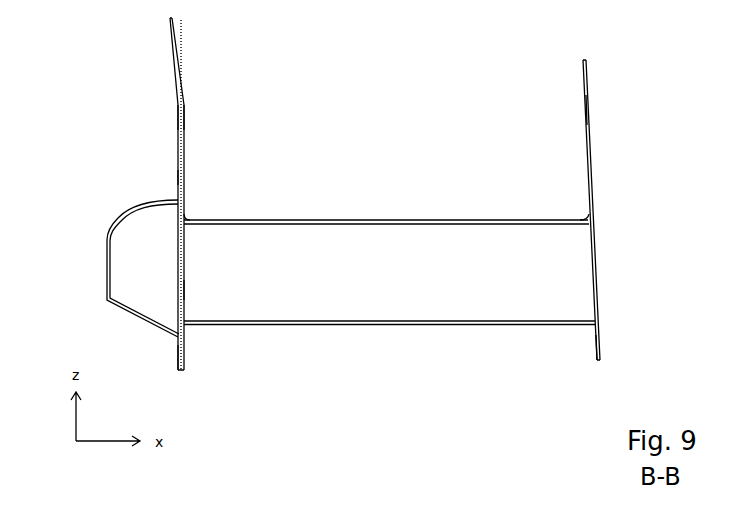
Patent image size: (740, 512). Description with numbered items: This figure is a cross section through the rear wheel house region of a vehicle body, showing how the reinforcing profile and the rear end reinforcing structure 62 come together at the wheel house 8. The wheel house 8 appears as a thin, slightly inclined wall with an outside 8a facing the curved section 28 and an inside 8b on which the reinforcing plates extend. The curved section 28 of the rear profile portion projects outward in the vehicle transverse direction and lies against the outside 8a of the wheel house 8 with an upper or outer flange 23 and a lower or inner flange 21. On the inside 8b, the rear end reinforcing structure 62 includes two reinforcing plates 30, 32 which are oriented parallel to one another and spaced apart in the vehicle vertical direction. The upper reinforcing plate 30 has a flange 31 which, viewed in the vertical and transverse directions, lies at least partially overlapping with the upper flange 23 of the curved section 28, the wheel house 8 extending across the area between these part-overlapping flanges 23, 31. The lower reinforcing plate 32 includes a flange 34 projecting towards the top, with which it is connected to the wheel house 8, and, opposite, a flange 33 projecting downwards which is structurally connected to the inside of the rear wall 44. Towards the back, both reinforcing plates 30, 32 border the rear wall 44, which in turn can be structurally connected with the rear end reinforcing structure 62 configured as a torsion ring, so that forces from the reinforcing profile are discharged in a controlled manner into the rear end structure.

The wheel house 8 is at (180, 97).
The outside of the wheel house 8a is at (170, 122).
The inside of the wheel house 8b is at (198, 122).
The lower flange 21 is at (178, 352).
The upper flange 23 is at (177, 178).
The curved section 28 is at (107, 248).
The upper reinforcing plate 30 is at (400, 224).
The flange of the upper reinforcing plate 31 is at (185, 195).
The lower reinforcing plate 32 is at (362, 325).
The downward projecting flange 33 is at (593, 340).
The upward projecting flange 34 is at (186, 297).
The rear wall 44 is at (583, 100).
The rear end reinforcing structure 62 is at (608, 115).